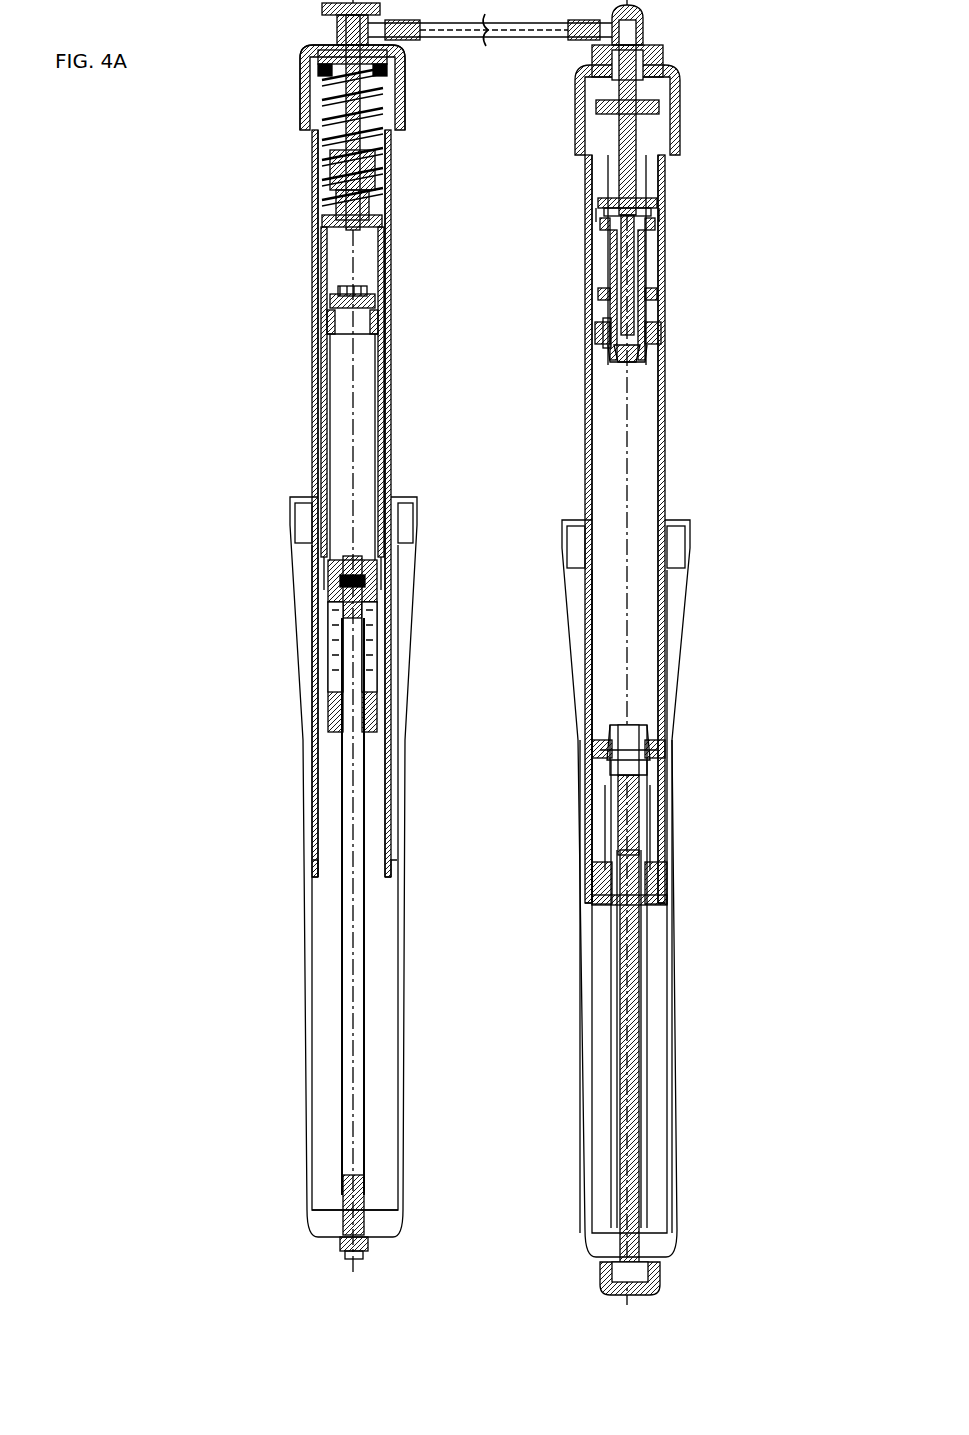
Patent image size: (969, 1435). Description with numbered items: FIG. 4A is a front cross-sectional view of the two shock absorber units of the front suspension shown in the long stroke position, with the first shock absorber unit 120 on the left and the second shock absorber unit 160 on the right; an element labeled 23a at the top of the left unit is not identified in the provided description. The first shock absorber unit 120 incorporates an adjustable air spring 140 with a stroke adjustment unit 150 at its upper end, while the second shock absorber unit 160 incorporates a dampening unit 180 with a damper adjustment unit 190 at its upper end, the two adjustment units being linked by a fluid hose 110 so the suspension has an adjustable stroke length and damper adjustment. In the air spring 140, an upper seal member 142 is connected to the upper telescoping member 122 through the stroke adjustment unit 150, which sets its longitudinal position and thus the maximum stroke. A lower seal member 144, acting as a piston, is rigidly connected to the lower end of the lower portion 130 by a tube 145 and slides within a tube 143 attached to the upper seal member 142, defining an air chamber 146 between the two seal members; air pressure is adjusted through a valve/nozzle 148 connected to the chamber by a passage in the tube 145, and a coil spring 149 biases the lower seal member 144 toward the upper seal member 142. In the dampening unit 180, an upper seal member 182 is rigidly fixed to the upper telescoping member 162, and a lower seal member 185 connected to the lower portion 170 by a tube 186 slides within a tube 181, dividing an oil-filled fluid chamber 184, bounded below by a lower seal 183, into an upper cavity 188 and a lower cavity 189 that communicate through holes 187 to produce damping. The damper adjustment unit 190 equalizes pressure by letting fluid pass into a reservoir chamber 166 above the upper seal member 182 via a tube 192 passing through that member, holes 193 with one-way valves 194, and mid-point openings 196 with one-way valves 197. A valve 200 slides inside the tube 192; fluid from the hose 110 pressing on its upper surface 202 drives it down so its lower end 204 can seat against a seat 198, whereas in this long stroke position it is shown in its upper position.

The adjuster knob 23a is at (322, 9).
The fluid hose 110 is at (545, 35).
The first shock absorber unit 120 is at (188, 325).
The upper telescoping member 122 is at (318, 188).
The lower portion 130 is at (305, 935).
The adjustable air spring 140 is at (272, 420).
The upper seal member 142 is at (325, 316).
The tube 143 is at (320, 350).
The lower seal member 144 is at (335, 575).
The tube 145 is at (343, 837).
The air chamber 146 is at (322, 470).
The valve/nozzle 148 is at (345, 1248).
The coil spring 149 is at (330, 668).
The stroke adjustment unit 150 is at (278, 125).
The second shock absorber unit 160 is at (765, 320).
The upper telescoping member 162 is at (665, 200).
The reservoir chamber 166 is at (596, 240).
The lower portion 170 is at (670, 990).
The dampening unit 180 is at (760, 425).
The tube 181 is at (670, 462).
The upper seal member 182 is at (668, 333).
The lower seal 183 is at (660, 868).
The fluid chamber 184 is at (648, 500).
The lower seal member 185 is at (650, 740).
The tube 186 is at (640, 1060).
The holes 187 is at (600, 732).
The upper cavity 188 is at (607, 652).
The lower cavity 189 is at (598, 808).
The damper adjustment unit 190 is at (692, 155).
The tube 192 is at (605, 270).
The holes 193 is at (600, 335).
The one-way valves 194 is at (600, 350).
The openings 196 is at (605, 200).
The one-way valves 197 is at (605, 230).
The seat 198 is at (603, 298).
The valve 200 is at (630, 125).
The upper surface 202 is at (640, 60).
The lower end 204 is at (665, 240).